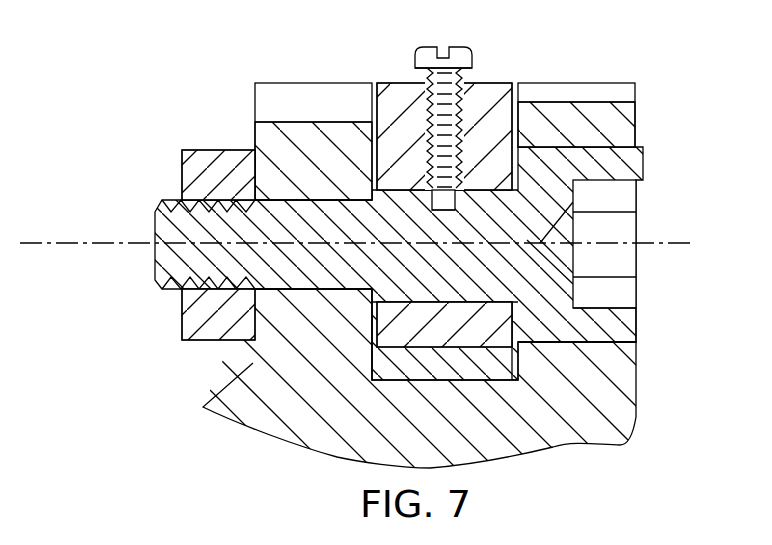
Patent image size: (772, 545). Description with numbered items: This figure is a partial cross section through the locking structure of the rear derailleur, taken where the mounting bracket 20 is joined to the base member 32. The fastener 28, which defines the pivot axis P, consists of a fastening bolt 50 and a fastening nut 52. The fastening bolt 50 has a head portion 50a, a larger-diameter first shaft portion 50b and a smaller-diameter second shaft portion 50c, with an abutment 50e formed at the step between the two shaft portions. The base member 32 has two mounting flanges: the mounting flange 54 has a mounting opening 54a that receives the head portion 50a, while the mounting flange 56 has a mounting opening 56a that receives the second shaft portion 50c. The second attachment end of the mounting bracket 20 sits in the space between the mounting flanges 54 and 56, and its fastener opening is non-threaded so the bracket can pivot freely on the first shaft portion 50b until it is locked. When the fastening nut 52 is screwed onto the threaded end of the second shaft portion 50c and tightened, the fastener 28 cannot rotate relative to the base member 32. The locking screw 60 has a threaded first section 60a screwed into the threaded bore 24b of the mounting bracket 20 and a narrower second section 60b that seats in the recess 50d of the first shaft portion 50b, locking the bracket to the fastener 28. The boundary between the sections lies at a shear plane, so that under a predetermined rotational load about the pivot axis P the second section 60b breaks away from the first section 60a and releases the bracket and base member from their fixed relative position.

The mounting bracket 20 is at (392, 78).
The threaded bore 24b is at (438, 143).
The fastener 28 is at (650, 162).
The base member 32 is at (644, 407).
The fastening bolt 50 is at (202, 233).
The head portion 50a is at (600, 347).
The first shaft portion 50b is at (472, 302).
The second shaft portion 50c is at (302, 293).
The recess 50d is at (450, 203).
The abutment 50e is at (372, 292).
The fastening nut 52 is at (212, 150).
The mounting flange 54 is at (590, 102).
The mounting opening 54a is at (583, 340).
The mounting flange 56 is at (298, 122).
The mounting opening 56a is at (326, 200).
The locking screw 60 is at (464, 40).
The first section 60a is at (463, 143).
The second section 60b is at (440, 200).
The pivot axis P is at (688, 243).